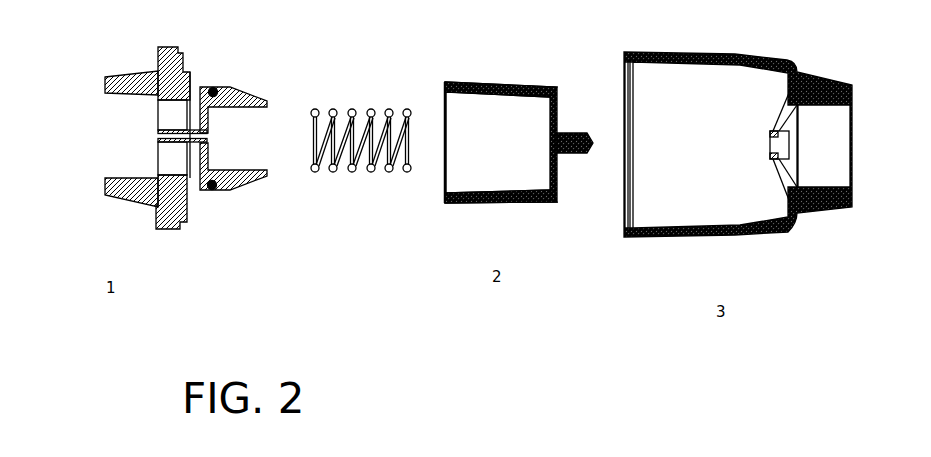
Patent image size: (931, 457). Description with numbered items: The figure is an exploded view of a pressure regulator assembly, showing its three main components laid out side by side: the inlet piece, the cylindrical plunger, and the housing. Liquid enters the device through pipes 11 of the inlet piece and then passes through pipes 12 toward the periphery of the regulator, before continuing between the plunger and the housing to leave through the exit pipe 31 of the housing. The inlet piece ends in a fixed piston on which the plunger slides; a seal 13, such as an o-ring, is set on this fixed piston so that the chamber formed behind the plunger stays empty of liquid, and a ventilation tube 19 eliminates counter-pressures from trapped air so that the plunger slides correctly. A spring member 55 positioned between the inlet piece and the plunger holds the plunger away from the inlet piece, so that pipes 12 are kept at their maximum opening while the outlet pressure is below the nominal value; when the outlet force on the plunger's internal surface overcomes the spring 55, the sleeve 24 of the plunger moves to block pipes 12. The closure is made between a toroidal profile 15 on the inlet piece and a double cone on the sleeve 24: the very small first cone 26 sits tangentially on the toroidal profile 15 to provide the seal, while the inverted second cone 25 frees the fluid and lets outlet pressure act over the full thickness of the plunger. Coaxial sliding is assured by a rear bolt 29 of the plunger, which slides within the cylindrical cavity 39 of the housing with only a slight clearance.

The pipes 11 is at (110, 120).
The pipes 12 is at (157, 61).
The seal 13 is at (242, 110).
The toroidal profile 15 is at (197, 235).
The ventilation tube 19 is at (120, 114).
The sleeve 24 is at (477, 64).
The second cone 25 is at (462, 223).
The first cone 26 is at (415, 160).
The rear bolt 29 is at (555, 89).
The spring member 55 is at (342, 175).
The exit pipe 31 is at (747, 137).
The cylindrical cavity 39 is at (739, 108).